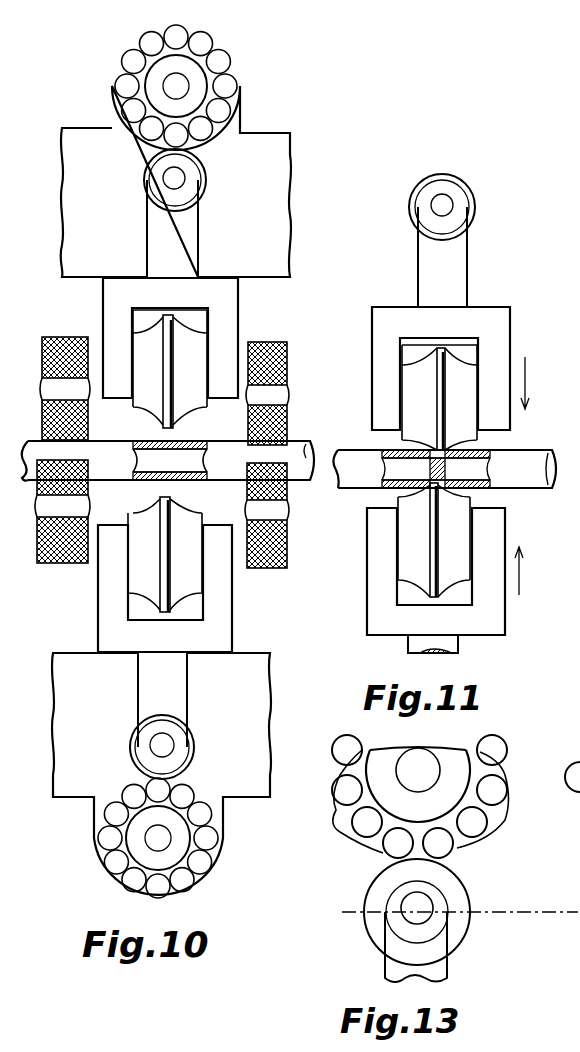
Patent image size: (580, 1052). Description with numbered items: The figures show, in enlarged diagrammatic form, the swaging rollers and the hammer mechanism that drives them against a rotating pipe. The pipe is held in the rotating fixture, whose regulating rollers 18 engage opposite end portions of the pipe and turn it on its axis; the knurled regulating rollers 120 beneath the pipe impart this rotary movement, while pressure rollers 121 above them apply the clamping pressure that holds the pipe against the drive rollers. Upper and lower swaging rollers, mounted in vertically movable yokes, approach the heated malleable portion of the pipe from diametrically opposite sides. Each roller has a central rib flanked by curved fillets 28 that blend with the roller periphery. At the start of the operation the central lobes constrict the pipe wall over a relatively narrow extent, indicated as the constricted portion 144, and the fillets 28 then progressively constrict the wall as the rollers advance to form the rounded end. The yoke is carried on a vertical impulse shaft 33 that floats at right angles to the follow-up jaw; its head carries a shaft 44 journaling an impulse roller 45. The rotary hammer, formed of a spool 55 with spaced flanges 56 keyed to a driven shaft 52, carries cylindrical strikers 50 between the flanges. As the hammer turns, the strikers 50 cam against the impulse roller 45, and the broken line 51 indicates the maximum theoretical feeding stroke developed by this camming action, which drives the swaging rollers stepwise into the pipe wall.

In FIG. 10, the regulating rollers 18 is at (290, 527).
In FIG. 10, the curved fillets 28 is at (150, 505).
In FIG. 13, the impulse shaft 33 is at (447, 968).
In FIG. 11, the shaft 44 is at (442, 216).
In FIG. 13, the shaft 44 is at (412, 924).
In FIG. 11, the impulse roller 45 is at (472, 208).
In FIG. 13, the impulse roller 45 is at (453, 892).
In FIG. 13, the strikers 50 is at (383, 853).
In FIG. 13, the broken line 51 is at (579, 925).
In FIG. 13, the driven shaft 52 is at (418, 758).
In FIG. 13, the spool 55 is at (448, 760).
In FIG. 13, the flanges 56 is at (508, 770).
In FIG. 10, the knurled regulating rollers 120 is at (50, 563).
In FIG. 10, the pressure rollers 121 is at (68, 337).
In FIG. 11, the constricted portion 144 is at (490, 490).